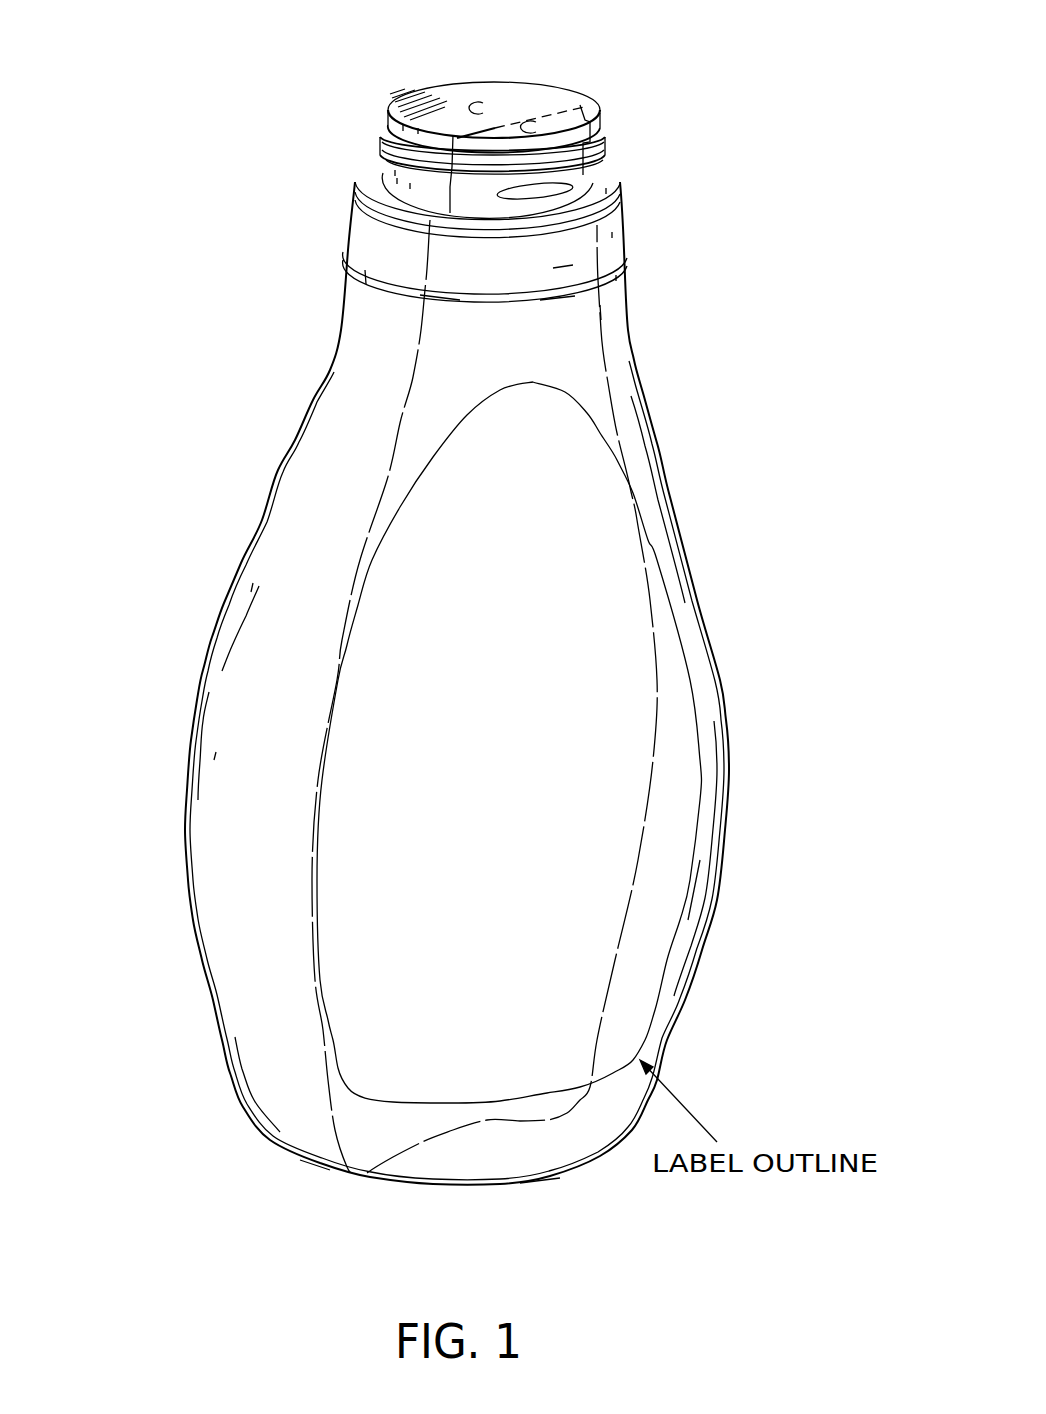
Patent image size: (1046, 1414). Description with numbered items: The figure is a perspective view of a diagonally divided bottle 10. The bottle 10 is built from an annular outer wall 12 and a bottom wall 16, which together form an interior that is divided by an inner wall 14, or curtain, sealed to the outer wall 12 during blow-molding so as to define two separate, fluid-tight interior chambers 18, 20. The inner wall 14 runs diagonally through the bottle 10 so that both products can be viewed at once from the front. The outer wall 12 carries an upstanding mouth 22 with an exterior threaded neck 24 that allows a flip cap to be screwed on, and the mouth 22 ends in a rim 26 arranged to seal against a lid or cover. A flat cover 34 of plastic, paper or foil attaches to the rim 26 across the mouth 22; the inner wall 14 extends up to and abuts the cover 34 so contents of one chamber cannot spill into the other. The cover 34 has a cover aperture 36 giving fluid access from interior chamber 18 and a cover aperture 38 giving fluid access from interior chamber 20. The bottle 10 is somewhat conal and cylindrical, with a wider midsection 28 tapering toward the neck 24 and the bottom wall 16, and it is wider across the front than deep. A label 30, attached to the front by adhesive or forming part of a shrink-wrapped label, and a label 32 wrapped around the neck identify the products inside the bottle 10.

The diagonally divided bottle 10 is at (724, 309).
The annular outer wall 12 is at (190, 702).
The inner wall 14 is at (378, 510).
The bottom wall 16 is at (550, 1180).
The interior chamber 18 is at (637, 453).
The interior chamber 20 is at (233, 908).
The mouth 22 is at (388, 117).
The neck 24 is at (603, 135).
The rim 26 is at (537, 87).
The midsection 28 is at (186, 827).
The label 30 is at (509, 742).
The label 32 is at (485, 246).
The cover 34 is at (550, 97).
The cover aperture 36 is at (545, 129).
The cover aperture 38 is at (488, 106).